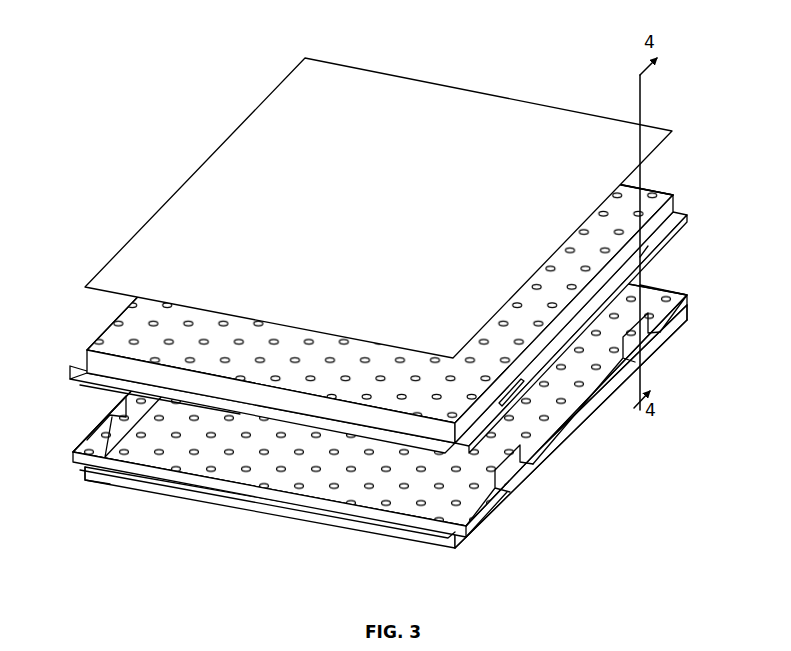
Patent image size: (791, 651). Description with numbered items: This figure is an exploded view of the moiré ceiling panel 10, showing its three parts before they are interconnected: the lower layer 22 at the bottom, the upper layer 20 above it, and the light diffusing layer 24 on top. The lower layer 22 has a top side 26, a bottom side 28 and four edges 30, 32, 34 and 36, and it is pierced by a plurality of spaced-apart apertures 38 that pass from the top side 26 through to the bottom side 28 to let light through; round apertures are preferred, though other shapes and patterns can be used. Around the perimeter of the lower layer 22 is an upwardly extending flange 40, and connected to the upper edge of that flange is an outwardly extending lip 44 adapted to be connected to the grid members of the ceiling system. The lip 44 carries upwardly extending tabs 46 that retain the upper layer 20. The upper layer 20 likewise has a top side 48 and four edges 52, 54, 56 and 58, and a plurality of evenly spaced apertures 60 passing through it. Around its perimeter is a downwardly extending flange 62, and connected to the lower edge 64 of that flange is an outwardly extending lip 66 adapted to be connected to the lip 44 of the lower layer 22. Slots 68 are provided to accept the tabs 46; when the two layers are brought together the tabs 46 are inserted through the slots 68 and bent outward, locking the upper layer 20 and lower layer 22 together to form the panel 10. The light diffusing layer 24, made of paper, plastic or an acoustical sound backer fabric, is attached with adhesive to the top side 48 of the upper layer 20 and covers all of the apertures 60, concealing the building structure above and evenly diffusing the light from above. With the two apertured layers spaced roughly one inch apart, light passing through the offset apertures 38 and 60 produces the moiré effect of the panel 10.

The moiré ceiling panel 10 is at (133, 121).
The upper layer 20 is at (377, 333).
The lower layer 22 is at (380, 399).
The light diffusing layer 24 is at (333, 83).
The top side 26 is at (457, 513).
The bottom side 28 is at (405, 541).
The edge 30 is at (235, 498).
The edge 32 is at (580, 427).
The edge 34 is at (662, 331).
The edge 36 is at (77, 477).
The apertures 38 is at (305, 488).
The upwardly extending flange 40 is at (523, 475).
The outwardly extending lip 44 is at (555, 438).
The upwardly extending tabs 46 is at (633, 333).
The top side 48 is at (625, 184).
The edge 52 is at (242, 388).
The edge 54 is at (653, 228).
The edge 56 is at (675, 211).
The edge 58 is at (84, 356).
The apertures 60 is at (125, 323).
The downwardly extending flange 62 is at (102, 366).
The lower edge 64 is at (100, 368).
The outwardly extending lip 66 is at (108, 381).
The slots 68 is at (641, 258).